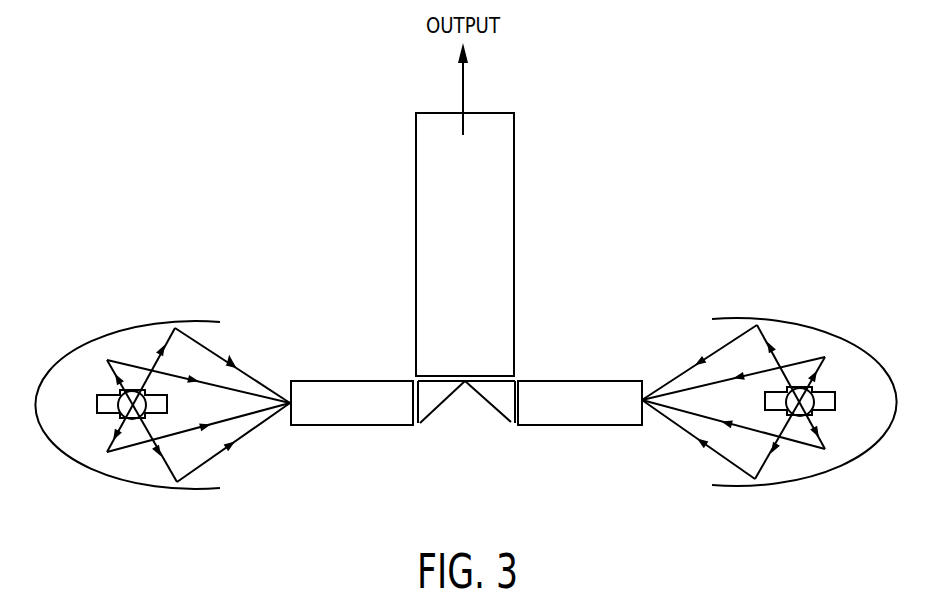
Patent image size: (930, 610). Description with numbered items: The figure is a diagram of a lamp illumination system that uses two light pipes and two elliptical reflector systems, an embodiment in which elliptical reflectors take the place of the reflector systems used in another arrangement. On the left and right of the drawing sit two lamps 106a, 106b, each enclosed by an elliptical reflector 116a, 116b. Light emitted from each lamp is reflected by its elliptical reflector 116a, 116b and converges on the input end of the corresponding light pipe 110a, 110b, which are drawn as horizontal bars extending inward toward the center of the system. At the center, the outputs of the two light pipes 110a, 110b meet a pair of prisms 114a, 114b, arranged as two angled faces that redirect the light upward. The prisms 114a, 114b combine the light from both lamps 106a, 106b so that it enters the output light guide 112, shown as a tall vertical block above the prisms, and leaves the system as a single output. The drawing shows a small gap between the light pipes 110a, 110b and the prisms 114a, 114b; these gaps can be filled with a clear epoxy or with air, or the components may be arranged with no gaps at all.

The lamp 106a is at (110, 414).
The lamp 106b is at (830, 414).
The light pipe 110a is at (348, 381).
The light pipe 110b is at (580, 425).
The output light guide 112 is at (514, 165).
The prism 114a is at (428, 417).
The prism 114b is at (508, 423).
The elliptical reflector 116a is at (88, 380).
The elliptical reflector 116b is at (847, 373).